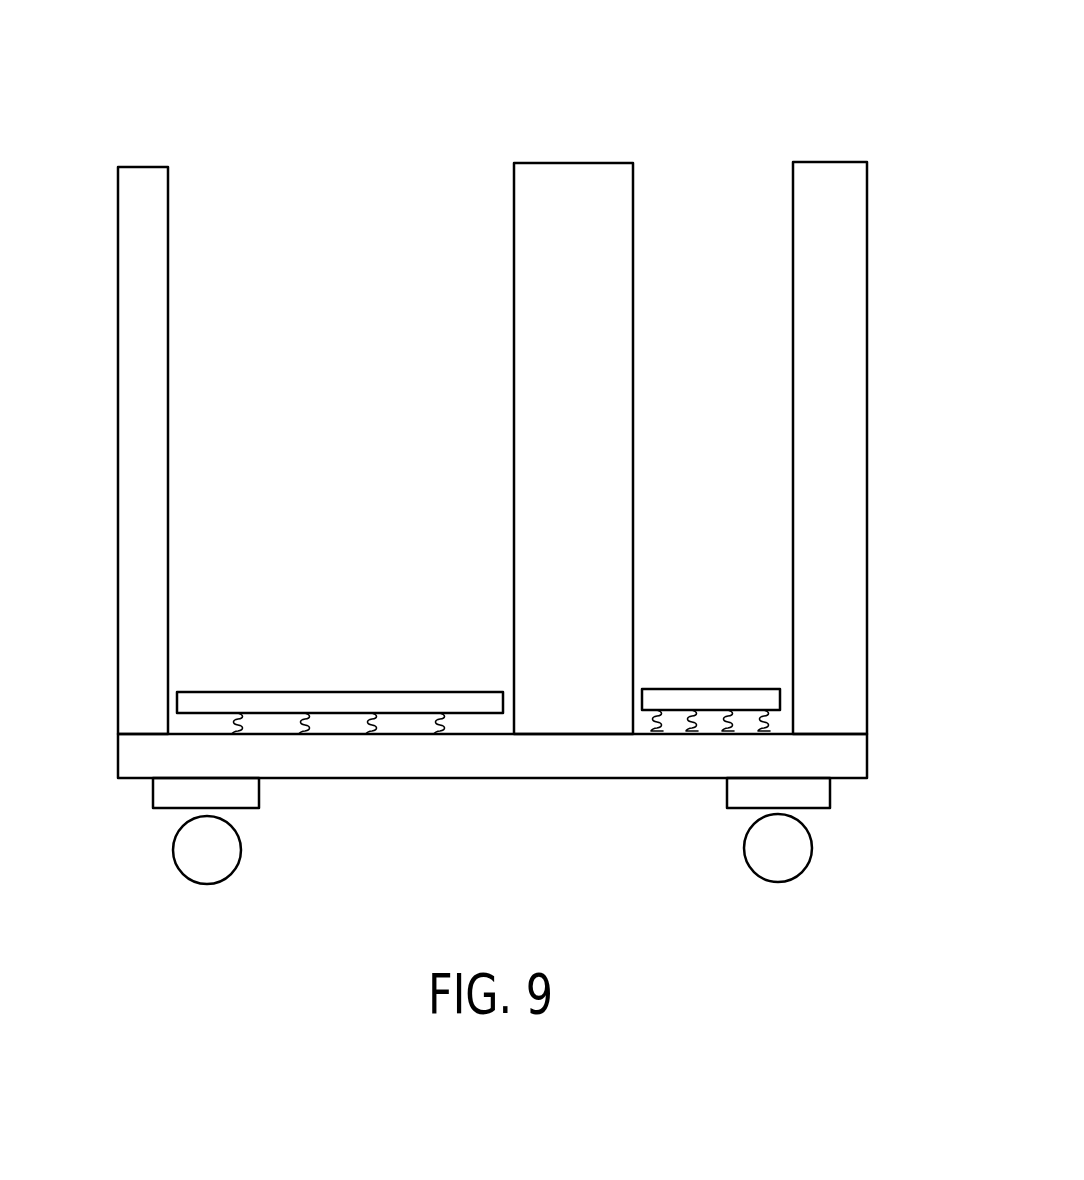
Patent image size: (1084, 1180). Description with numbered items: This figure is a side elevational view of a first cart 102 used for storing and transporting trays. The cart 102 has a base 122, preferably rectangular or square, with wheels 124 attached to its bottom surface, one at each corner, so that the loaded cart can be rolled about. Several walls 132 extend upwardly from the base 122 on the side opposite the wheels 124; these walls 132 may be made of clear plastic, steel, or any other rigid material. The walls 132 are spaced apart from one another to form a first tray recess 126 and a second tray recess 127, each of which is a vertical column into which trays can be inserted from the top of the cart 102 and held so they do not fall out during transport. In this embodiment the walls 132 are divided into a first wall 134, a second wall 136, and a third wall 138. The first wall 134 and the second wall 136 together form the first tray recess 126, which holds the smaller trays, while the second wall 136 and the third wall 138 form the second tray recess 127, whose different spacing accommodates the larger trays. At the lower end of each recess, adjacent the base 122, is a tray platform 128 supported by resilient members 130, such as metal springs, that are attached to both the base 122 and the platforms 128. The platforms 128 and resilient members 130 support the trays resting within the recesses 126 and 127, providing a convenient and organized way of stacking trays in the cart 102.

The first cart 102 is at (779, 106).
The base 122 is at (687, 778).
The wheels 124 is at (206, 868).
The first tray recess 126 is at (701, 183).
The second tray recess 127 is at (376, 191).
The tray platforms 128 is at (275, 690).
The resilient members 130 is at (305, 735).
The walls 132 is at (153, 297).
The first wall 134 is at (843, 694).
The second wall 136 is at (552, 712).
The third wall 138 is at (142, 706).